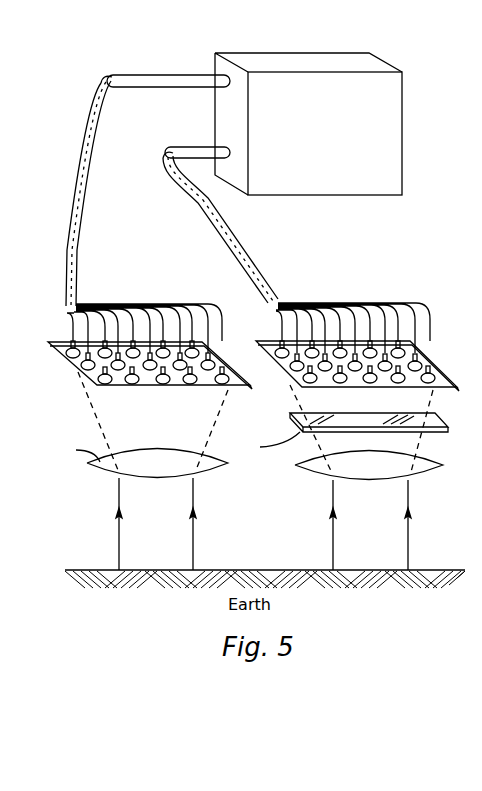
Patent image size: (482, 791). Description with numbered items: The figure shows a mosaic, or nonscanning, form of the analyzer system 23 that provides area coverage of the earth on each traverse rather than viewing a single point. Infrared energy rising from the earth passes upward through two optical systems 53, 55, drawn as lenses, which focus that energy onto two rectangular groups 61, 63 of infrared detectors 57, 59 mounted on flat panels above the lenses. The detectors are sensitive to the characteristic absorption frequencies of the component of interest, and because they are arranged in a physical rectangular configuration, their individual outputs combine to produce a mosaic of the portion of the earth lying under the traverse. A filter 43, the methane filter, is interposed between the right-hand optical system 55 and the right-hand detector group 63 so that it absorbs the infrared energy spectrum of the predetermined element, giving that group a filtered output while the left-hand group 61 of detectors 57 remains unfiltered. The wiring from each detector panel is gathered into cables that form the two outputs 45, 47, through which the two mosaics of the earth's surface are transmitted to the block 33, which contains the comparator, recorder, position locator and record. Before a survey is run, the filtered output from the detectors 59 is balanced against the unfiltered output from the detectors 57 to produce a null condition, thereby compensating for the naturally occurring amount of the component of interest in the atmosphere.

The analyzer system 23 is at (263, 516).
The dashed block 33 is at (330, 138).
The methane filter 43 is at (303, 431).
The output line 45 is at (181, 72).
The output line 47 is at (190, 145).
The optical system 53 is at (105, 472).
The optical system 55 is at (434, 468).
The detectors 57 is at (68, 355).
The detectors 59 is at (435, 382).
The rectangular group 61 is at (178, 388).
The rectangular group 63 is at (437, 387).